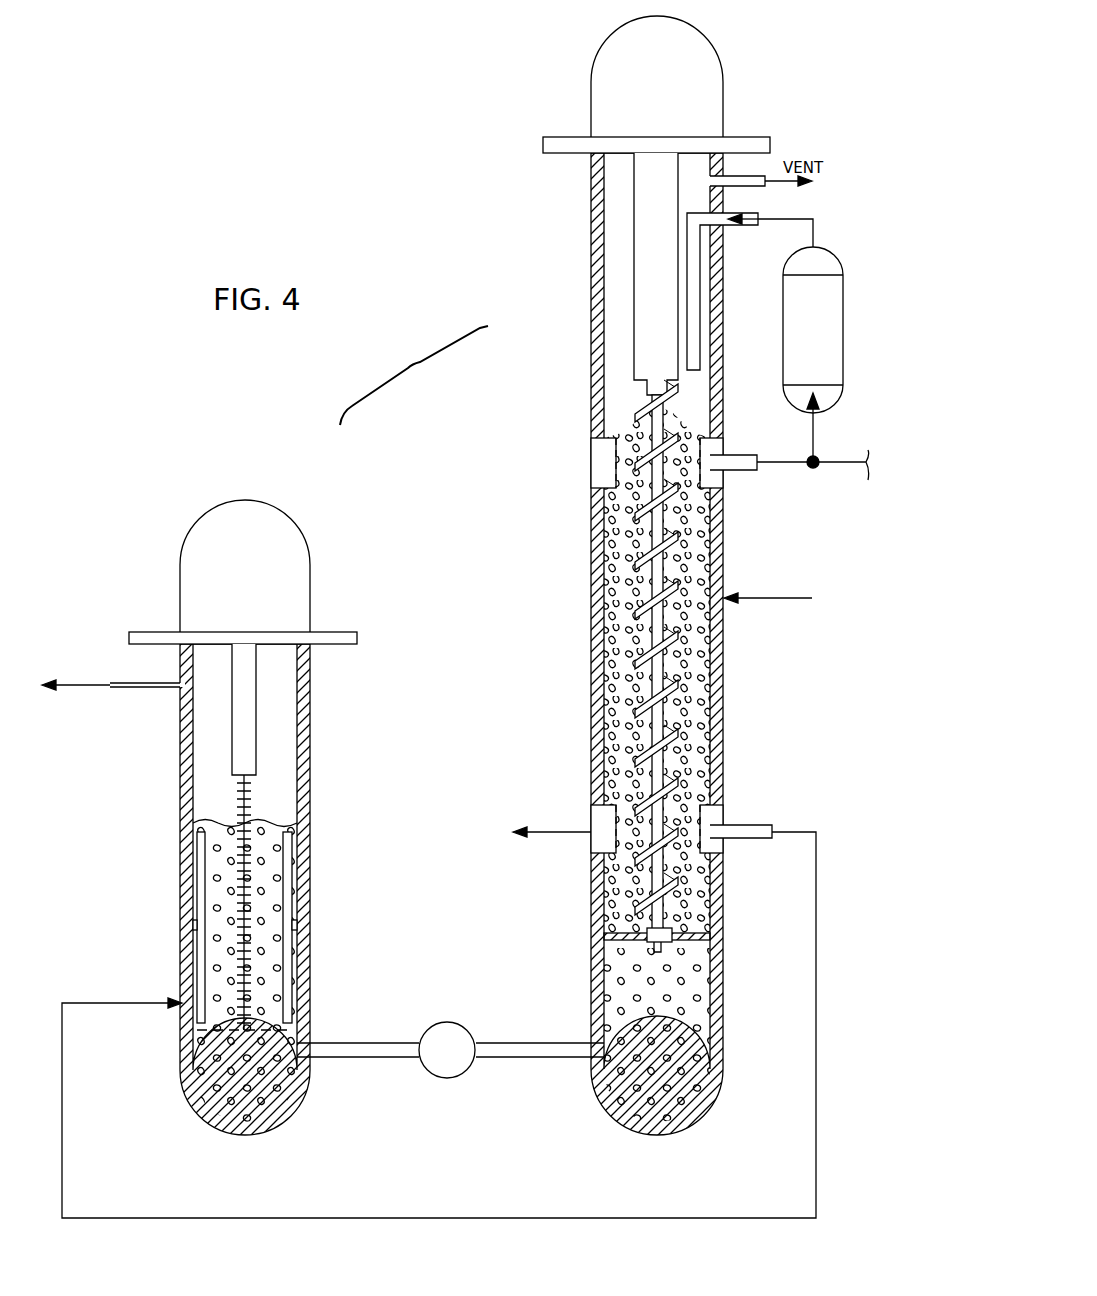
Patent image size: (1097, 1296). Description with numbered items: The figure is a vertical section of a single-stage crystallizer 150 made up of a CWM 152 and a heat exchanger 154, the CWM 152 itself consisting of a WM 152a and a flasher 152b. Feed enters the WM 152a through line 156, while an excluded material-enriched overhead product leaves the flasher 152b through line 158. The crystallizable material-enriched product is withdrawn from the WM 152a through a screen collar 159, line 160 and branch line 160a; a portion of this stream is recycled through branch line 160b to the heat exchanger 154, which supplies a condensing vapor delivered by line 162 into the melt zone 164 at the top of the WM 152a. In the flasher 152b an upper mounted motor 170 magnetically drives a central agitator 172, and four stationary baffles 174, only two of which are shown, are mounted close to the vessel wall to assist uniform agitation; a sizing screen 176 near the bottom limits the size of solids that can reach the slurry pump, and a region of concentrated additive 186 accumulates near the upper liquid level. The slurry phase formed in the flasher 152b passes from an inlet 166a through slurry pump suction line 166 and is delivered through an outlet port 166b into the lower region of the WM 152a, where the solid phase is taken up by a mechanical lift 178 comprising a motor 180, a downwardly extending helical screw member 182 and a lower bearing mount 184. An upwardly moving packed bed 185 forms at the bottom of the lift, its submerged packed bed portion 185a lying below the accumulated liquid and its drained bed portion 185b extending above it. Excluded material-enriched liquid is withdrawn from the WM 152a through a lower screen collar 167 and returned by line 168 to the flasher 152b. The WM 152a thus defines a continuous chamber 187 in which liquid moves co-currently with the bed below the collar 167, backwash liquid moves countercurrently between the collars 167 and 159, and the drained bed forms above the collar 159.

The single-stage crystallizer 150 is at (245, 376).
The CWM 152 is at (410, 375).
The WM 152a is at (592, 681).
The flasher 152b is at (305, 786).
The heat exchanger 154 is at (792, 402).
The line 156 is at (810, 600).
The line 158 is at (116, 682).
The screen collar 159 is at (602, 442).
The line 160 is at (757, 466).
The branch line 160a is at (845, 466).
The branch line 160b is at (814, 438).
The line 162 is at (786, 218).
The melt zone 164 is at (617, 277).
The slurry pump suction line 166 is at (356, 1043).
The inlet 166a is at (300, 1060).
The outlet port 166b is at (604, 1060).
The screen collar 167 is at (605, 820).
The line 168 is at (775, 826).
The motor 170 is at (280, 570).
The central agitator 172 is at (250, 745).
The stationary baffles 174 is at (200, 888).
The sizing screen 176 is at (200, 1032).
The mechanical lift 178 is at (626, 212).
The motor 180 is at (708, 97).
The helical screw member 182 is at (690, 760).
The lower bearing mount 184 is at (712, 938).
The packed bed 185 is at (620, 745).
The submerged packed bed portion 185a is at (614, 568).
The drained bed portion 185b is at (625, 432).
The region of concentrated additive 186 is at (298, 823).
The continuous chamber 187 is at (617, 318).